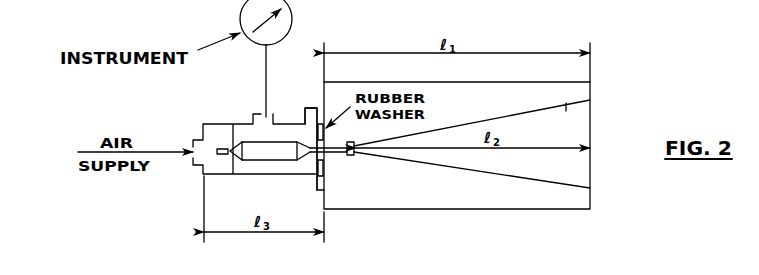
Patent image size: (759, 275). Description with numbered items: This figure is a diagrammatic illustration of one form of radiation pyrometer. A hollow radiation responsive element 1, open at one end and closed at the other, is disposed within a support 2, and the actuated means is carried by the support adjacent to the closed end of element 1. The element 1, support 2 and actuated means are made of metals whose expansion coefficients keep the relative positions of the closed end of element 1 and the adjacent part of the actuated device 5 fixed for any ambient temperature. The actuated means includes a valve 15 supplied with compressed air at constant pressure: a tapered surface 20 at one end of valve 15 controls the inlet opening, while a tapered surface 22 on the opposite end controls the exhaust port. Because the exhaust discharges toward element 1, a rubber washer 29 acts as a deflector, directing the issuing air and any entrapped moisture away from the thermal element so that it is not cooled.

The radiation responsive element 1 is at (456, 168).
The support 2 is at (462, 210).
The element of the actuated device 5 is at (352, 157).
The valve 15 is at (262, 156).
The tapered surface 20 is at (222, 154).
The tapered surface 22 is at (298, 127).
The rubber washer 29 is at (325, 170).